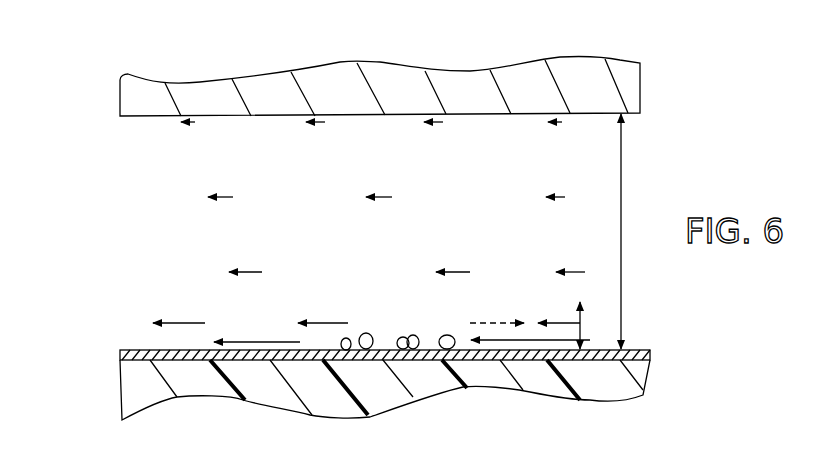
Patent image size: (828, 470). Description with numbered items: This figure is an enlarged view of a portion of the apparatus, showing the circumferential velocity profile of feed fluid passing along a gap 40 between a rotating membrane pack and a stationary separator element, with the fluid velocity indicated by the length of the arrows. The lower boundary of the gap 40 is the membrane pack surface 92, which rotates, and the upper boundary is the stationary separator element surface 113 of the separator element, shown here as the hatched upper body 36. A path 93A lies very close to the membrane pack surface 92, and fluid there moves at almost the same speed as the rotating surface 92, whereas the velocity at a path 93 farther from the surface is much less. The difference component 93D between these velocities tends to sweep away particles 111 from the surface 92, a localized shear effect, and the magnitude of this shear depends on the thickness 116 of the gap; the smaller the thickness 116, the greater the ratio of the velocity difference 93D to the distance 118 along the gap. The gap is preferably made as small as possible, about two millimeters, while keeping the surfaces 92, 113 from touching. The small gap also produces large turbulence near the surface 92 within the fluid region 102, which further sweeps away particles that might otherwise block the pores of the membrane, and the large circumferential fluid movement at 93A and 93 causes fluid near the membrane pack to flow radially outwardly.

The upper plate 36 is at (645, 85).
The gap 40 is at (132, 222).
The membrane pack surface 92 is at (352, 349).
The path 93 is at (182, 323).
The path 93A is at (250, 342).
The difference component 93D is at (476, 323).
The flow region 102 is at (256, 143).
The particles 111 is at (416, 348).
The separator element surface 113 is at (478, 112).
The thickness 116 is at (622, 176).
The distance 118 is at (588, 334).